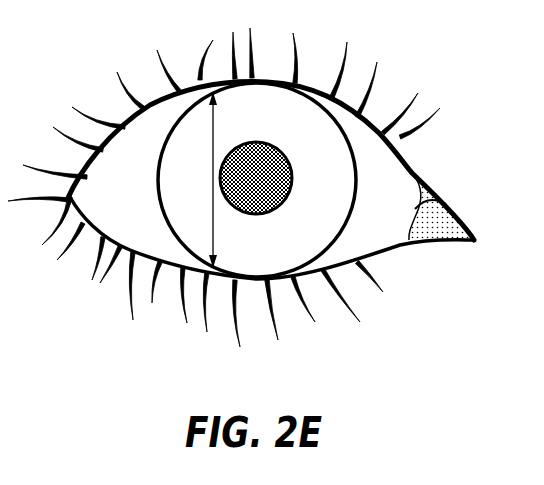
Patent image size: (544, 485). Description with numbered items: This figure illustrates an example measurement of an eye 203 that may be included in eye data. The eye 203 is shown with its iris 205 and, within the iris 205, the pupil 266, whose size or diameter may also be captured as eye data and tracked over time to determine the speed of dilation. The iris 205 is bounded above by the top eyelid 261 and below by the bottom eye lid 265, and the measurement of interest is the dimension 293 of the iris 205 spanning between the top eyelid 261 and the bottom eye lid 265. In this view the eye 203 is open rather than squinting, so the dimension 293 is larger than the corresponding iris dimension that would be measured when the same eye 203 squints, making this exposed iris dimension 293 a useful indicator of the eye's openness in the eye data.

The eye 203 is at (410, 284).
The iris 205 is at (279, 133).
The top eyelid 261 is at (190, 82).
The bottom eye lid 265 is at (260, 281).
The pupil 266 is at (248, 214).
The dimension 293 is at (197, 180).